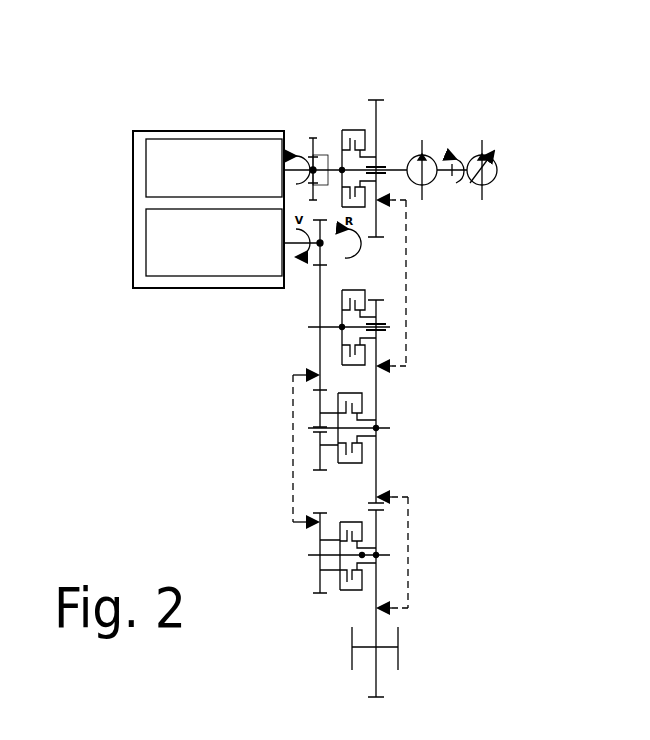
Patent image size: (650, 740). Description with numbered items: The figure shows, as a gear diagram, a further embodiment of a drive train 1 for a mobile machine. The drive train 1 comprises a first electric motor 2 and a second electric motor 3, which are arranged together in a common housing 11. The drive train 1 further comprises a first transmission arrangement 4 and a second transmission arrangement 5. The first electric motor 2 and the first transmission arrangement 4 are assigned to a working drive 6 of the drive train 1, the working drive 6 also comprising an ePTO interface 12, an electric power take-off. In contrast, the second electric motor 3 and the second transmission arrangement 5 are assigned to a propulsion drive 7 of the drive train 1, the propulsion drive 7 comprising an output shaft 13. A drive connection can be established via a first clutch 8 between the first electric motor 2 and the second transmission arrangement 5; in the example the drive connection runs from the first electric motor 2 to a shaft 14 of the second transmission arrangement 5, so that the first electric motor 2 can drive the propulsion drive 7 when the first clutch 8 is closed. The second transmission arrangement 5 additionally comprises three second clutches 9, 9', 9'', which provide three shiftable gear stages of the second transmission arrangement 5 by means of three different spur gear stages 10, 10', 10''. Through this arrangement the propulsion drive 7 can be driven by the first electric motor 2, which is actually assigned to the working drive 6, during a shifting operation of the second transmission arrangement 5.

The drive train 1 is at (287, 70).
The first electric motor 2 is at (155, 160).
The second electric motor 3 is at (160, 243).
The first transmission arrangement 4 is at (318, 148).
The second transmission arrangement 5 is at (438, 373).
The working drive 6 is at (392, 83).
The propulsion drive 7 is at (474, 514).
The first clutch 8 is at (355, 125).
The second clutch 9 is at (410, 305).
The second clutch 9' is at (442, 416).
The second clutch 9'' is at (412, 556).
The spur gear stage 10 is at (304, 323).
The spur gear stage 10' is at (427, 444).
The spur gear stage 10'' is at (273, 484).
The common housing 11 is at (220, 131).
The ePTO interface 12 is at (453, 136).
The output shaft 13 is at (398, 636).
The shaft 14 is at (380, 427).